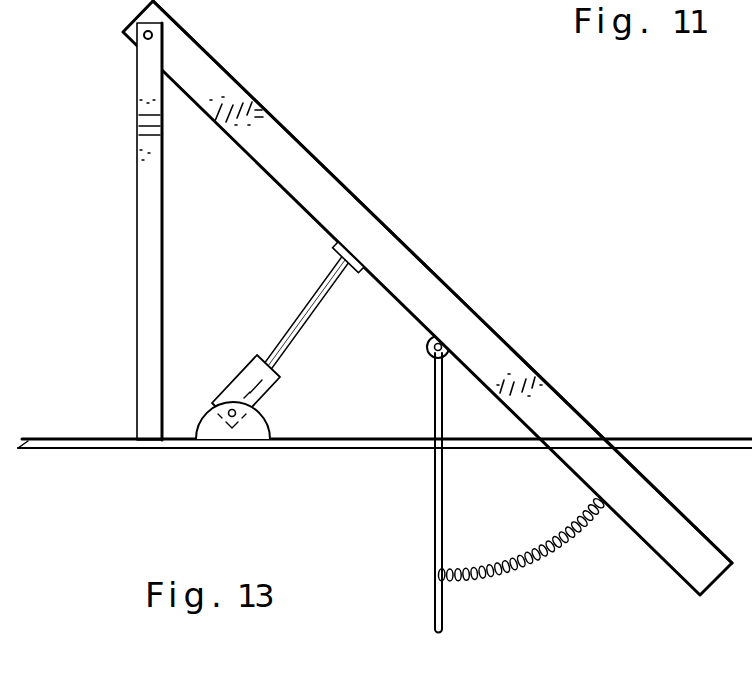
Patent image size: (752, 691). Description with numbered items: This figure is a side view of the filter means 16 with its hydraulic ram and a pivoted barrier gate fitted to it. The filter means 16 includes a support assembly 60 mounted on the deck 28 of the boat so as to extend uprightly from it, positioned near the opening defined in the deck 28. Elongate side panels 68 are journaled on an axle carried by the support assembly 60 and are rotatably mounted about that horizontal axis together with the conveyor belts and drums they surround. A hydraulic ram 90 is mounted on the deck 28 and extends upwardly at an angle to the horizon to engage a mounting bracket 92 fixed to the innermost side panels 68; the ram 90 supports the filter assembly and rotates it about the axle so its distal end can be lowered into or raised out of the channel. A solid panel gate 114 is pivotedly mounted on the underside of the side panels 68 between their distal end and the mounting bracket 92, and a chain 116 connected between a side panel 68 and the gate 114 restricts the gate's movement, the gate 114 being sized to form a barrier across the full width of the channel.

The filter means 16 is at (335, 175).
The deck panel 28 is at (78, 438).
The support assembly 60 is at (148, 200).
The side panels 68 is at (402, 256).
The hydraulic ram 90 is at (250, 374).
The mounting bracket 92 is at (343, 263).
The solid panel gate 114 is at (434, 409).
The chain 116 is at (518, 552).